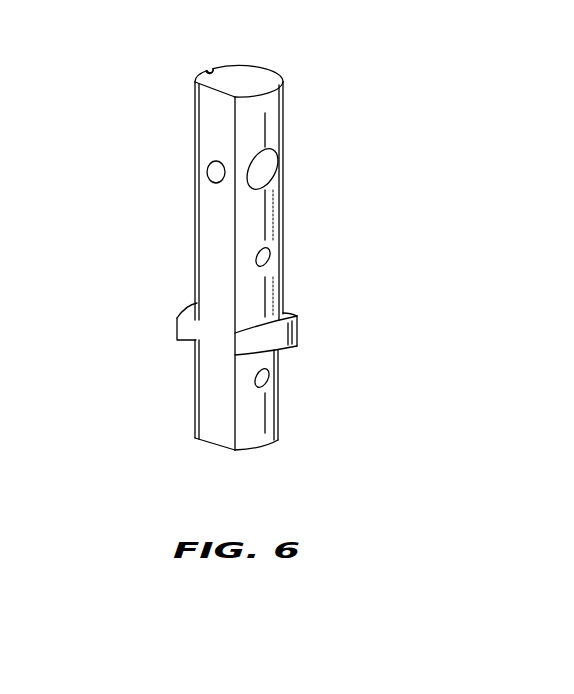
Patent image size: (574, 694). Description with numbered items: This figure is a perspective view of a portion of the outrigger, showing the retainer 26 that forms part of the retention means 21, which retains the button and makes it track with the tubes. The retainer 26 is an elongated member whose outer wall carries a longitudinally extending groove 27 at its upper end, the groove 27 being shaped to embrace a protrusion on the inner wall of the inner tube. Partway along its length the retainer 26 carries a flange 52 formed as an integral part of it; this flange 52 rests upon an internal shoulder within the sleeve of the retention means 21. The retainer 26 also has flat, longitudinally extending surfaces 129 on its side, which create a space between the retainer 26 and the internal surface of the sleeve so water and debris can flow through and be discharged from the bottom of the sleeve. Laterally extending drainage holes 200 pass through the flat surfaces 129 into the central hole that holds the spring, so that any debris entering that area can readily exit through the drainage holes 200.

The retention means 21 is at (249, 236).
The retainer 26 is at (281, 217).
The longitudinally extending groove 27 is at (207, 70).
The flange 52 is at (295, 330).
The flat longitudinally extending surface 129 is at (212, 393).
The drainage hole 200 is at (212, 175).